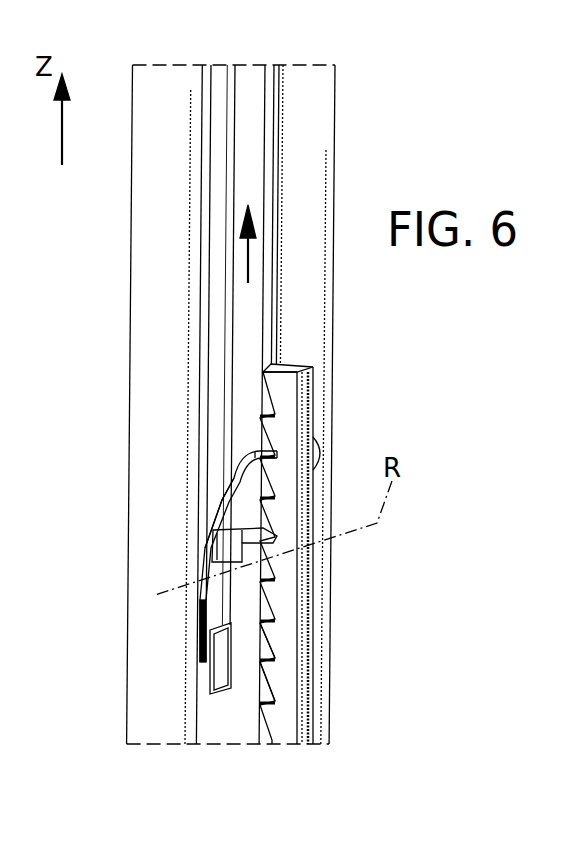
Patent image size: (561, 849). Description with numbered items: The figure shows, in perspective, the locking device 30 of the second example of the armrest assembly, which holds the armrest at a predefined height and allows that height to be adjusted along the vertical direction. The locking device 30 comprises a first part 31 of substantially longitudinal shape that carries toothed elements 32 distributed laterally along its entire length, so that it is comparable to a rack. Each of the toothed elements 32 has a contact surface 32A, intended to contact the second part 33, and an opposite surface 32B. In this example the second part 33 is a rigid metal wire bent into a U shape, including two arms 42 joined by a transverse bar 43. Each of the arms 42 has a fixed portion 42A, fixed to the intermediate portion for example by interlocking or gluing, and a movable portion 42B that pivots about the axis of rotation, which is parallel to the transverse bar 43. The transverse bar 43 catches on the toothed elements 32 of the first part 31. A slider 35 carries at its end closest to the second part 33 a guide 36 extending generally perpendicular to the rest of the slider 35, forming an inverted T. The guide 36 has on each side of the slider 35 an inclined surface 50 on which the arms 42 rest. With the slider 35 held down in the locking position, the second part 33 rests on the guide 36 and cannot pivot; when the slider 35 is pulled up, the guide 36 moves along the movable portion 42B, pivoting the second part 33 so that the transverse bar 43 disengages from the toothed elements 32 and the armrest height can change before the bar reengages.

The locking device 30 is at (232, 443).
The first part 31 is at (299, 595).
The toothed elements 32 is at (265, 710).
The contact surface 32A is at (260, 663).
The opposite surface 32B is at (267, 690).
The second part 33 is at (222, 502).
The slider 35 is at (252, 160).
The guide 36 is at (235, 549).
The arms 42 is at (226, 536).
The fixed portion 42A is at (198, 625).
The movable portion 42B is at (213, 527).
The transverse bar 43 is at (255, 460).
The surface 50 is at (205, 545).